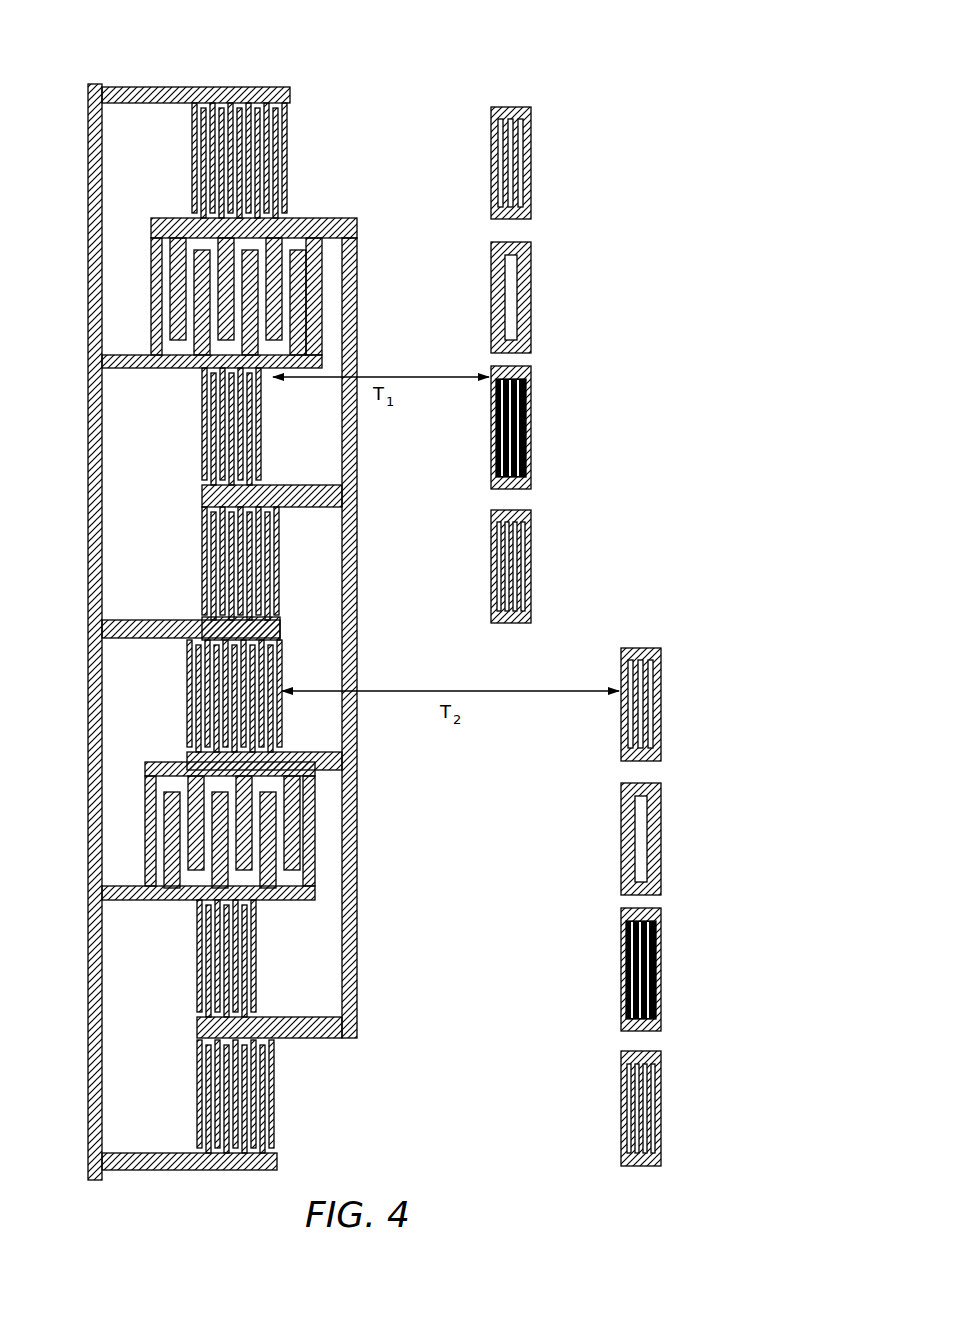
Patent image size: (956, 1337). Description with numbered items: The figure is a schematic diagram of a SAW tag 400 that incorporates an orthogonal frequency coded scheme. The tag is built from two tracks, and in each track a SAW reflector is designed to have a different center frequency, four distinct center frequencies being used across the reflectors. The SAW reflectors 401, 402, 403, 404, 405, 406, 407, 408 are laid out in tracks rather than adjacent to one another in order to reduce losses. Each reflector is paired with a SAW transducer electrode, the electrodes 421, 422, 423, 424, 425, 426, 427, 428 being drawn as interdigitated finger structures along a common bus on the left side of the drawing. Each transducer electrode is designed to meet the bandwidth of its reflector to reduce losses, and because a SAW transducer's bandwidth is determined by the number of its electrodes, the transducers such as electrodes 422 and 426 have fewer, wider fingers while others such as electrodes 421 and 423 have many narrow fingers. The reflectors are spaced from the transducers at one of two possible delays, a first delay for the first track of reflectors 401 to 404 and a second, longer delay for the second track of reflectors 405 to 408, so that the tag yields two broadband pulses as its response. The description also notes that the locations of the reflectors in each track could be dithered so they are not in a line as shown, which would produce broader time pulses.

The SAW tag 400 is at (647, 80).
The SAW reflector 401 is at (491, 166).
The SAW reflector 402 is at (491, 305).
The SAW reflector 403 is at (491, 446).
The SAW reflector 404 is at (491, 571).
The SAW reflector 405 is at (621, 731).
The SAW reflector 406 is at (621, 841).
The SAW reflector 407 is at (621, 971).
The SAW reflector 408 is at (621, 1111).
The SAW transducer electrode 421 is at (192, 172).
The SAW transducer electrode 422 is at (151, 283).
The SAW transducer electrode 423 is at (202, 435).
The SAW transducer electrode 424 is at (202, 565).
The SAW transducer electrode 425 is at (187, 695).
The SAW transducer electrode 426 is at (145, 812).
The SAW transducer electrode 427 is at (197, 956).
The SAW transducer electrode 428 is at (197, 1097).